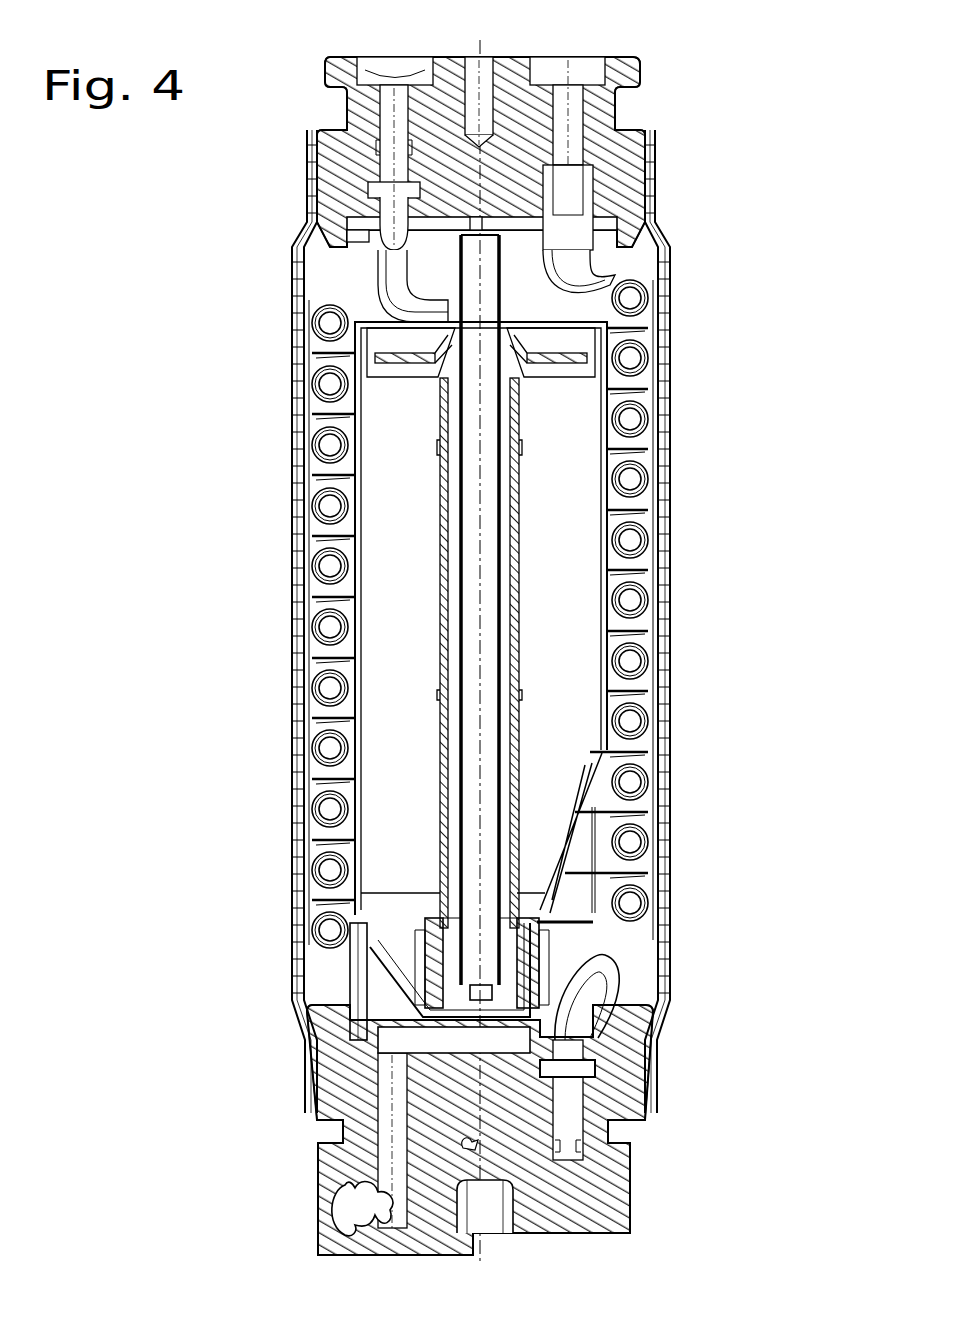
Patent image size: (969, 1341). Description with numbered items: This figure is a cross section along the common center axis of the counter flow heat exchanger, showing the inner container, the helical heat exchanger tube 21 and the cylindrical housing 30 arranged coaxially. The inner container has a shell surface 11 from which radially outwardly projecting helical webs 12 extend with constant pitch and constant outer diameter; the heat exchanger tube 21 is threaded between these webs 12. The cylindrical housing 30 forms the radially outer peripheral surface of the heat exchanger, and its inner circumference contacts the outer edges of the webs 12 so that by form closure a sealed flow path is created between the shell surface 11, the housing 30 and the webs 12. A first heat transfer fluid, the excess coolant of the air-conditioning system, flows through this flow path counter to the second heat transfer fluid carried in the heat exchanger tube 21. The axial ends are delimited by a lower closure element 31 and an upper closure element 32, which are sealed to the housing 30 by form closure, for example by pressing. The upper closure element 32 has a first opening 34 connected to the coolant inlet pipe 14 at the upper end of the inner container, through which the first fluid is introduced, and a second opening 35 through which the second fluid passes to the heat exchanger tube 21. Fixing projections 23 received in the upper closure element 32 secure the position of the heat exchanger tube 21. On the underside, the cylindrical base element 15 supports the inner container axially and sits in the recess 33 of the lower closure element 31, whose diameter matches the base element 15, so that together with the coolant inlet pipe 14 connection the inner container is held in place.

The shell surface 11 is at (330, 625).
The helical webs 12 is at (300, 432).
The coolant inlet pipe 14 is at (562, 240).
The base element 15 is at (357, 980).
The heat exchanger tube 21 is at (677, 545).
The fixing projections 23 is at (400, 218).
The cylindrical housing 30 is at (675, 415).
The lower closure element 31 is at (570, 1190).
The upper closure element 32 is at (655, 190).
The recess 33 is at (350, 1040).
The first opening 34 is at (575, 65).
The second opening 35 is at (392, 85).